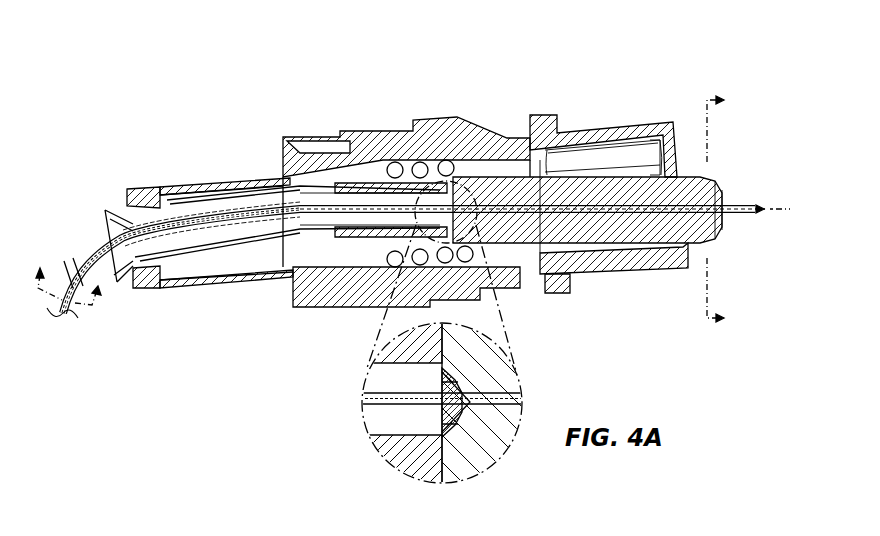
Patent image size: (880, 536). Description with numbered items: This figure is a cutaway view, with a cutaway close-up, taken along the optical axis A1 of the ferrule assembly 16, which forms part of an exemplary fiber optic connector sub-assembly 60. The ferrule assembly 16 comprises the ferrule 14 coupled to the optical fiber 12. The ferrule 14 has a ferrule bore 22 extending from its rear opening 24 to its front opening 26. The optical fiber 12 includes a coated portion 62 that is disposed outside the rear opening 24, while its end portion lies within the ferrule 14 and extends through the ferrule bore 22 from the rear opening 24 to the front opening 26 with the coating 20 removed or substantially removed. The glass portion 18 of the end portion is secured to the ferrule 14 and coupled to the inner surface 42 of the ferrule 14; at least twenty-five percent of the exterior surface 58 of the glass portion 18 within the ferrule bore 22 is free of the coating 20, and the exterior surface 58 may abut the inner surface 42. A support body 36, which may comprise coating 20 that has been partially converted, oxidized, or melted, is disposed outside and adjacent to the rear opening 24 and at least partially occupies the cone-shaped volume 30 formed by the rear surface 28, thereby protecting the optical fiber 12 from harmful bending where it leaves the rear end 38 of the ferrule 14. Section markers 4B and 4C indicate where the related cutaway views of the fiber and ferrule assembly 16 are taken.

The optical fiber 12 is at (93, 253).
The ferrule 14 is at (687, 190).
The ferrule assembly 16 is at (723, 170).
The glass portion 18 is at (233, 218).
The coating 20 is at (321, 213).
The ferrule bore 22 is at (618, 212).
The rear opening 24 is at (482, 282).
The front opening 26 is at (727, 212).
The rear surface 28 is at (412, 477).
The cone-shaped volume 30 is at (490, 463).
The support body 36 is at (378, 445).
The rear end 38 is at (456, 158).
The inner surface 42 is at (652, 213).
The exterior surface 58 is at (567, 207).
The fiber optic connector sub-assembly 60 is at (665, 58).
The coated portion 62 is at (207, 207).
The section line 4B is at (83, 257).
The section line 4C is at (728, 209).
The optical axis A1 is at (788, 197).